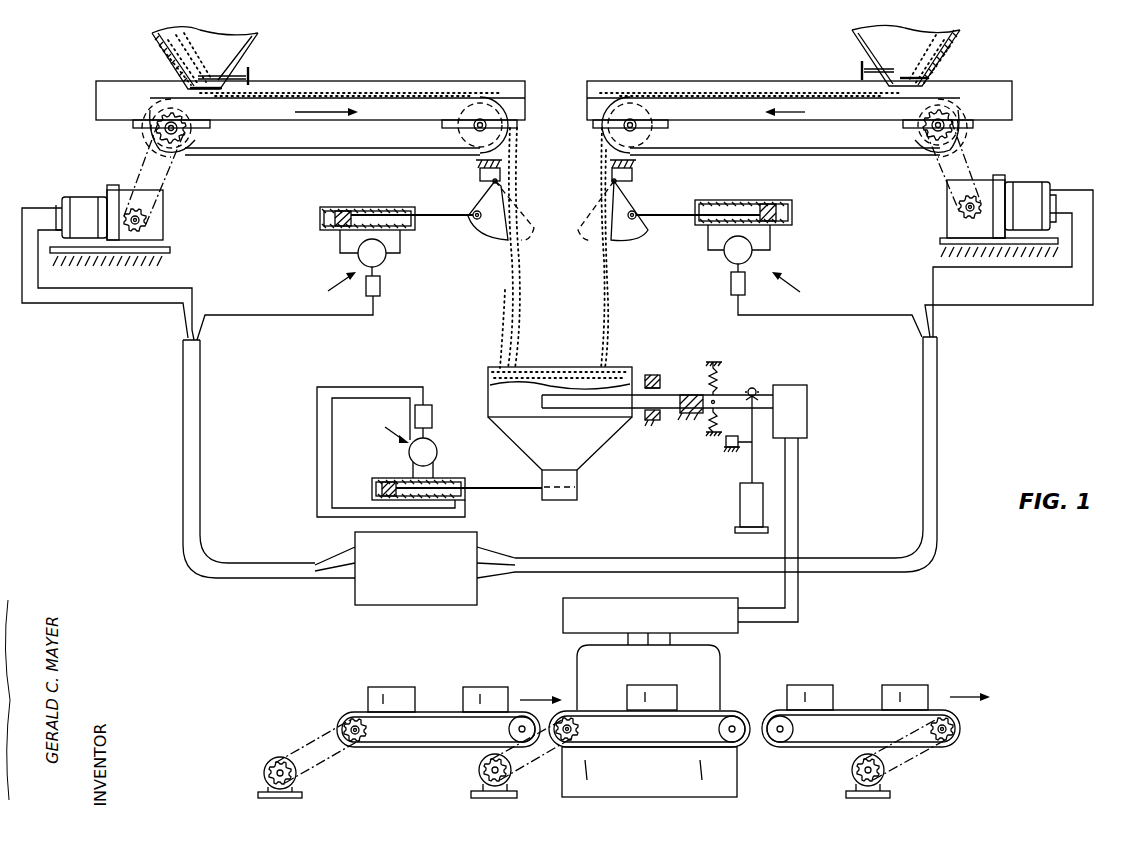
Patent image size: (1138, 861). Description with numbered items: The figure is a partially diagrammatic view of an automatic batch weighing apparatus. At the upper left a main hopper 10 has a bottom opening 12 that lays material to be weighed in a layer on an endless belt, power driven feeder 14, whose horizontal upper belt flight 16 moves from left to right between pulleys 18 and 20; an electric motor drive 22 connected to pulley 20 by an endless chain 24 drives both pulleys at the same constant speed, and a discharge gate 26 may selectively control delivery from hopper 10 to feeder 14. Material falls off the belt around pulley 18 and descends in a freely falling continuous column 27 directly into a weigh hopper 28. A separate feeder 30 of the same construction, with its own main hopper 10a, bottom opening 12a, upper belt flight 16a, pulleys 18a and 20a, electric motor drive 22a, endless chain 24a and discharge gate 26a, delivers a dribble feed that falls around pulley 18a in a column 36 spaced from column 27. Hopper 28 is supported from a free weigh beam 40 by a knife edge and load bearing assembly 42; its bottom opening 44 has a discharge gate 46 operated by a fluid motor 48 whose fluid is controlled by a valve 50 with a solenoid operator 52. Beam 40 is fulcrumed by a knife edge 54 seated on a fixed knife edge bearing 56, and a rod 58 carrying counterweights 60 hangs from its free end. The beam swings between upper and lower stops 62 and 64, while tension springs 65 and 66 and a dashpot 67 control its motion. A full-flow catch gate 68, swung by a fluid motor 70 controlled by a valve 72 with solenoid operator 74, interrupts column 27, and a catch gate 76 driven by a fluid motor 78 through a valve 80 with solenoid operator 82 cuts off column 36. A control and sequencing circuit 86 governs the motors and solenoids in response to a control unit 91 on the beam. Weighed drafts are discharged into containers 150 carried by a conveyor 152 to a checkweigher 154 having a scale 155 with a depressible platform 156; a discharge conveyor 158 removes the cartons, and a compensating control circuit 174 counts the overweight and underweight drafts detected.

The main hopper 10 is at (257, 46).
The main hopper 10a is at (957, 43).
The bottom opening 12 is at (216, 88).
The bottom opening 12a is at (906, 88).
The power driven feeder 14 is at (382, 90).
The upper belt flight 16 is at (312, 97).
The upper belt flight 16a is at (768, 97).
The pulley 18 is at (466, 133).
The pulley 18a is at (645, 133).
The pulley 20 is at (193, 143).
The pulley 20a is at (913, 140).
The electric motor drive 22 is at (90, 197).
The electric motor drive 22a is at (1035, 188).
The endless chain 24 is at (176, 180).
The endless chain 24a is at (975, 160).
The discharge gate 26 is at (252, 74).
The discharge gate 26a is at (861, 71).
The continuous column 27 is at (522, 268).
The weigh hopper 28 is at (522, 437).
The feeder 30 is at (706, 90).
The column 36 is at (607, 300).
The weigh beam 40 is at (606, 410).
The knife edge and load bearing assembly 42 is at (558, 390).
The opening 44 is at (576, 502).
The discharge gate 46 is at (522, 490).
The fluid motor 48 is at (440, 500).
The valve 50 is at (437, 446).
The solenoid operator 52 is at (425, 405).
The knife edge 54 is at (690, 395).
The knife edge bearing 56 is at (690, 415).
The rod 58 is at (750, 471).
The counterweights 60 is at (740, 513).
The upper stop 62 is at (650, 375).
The lower stop 64 is at (655, 422).
The tension spring 65 is at (716, 379).
The tension spring 66 is at (716, 397).
The dashpot 67 is at (728, 448).
The full-flow catch gate 68 is at (494, 235).
The fluid motor 70 is at (412, 208).
The valve 72 is at (388, 257).
The solenoid operator 74 is at (382, 296).
The catch gate 76 is at (620, 197).
The fluid motor 78 is at (794, 206).
The valve 80 is at (753, 256).
The solenoid operator 82 is at (730, 289).
The control and sequencing circuit 86 is at (478, 599).
The control unit 91 is at (808, 416).
The containers 150 is at (412, 698).
The conveyor 152 is at (413, 748).
The checkweigher 154 is at (745, 775).
The scale 155 is at (633, 781).
The depressible platform 156 is at (736, 711).
The discharge conveyor 158 is at (812, 744).
The compensating control circuit 174 is at (563, 619).